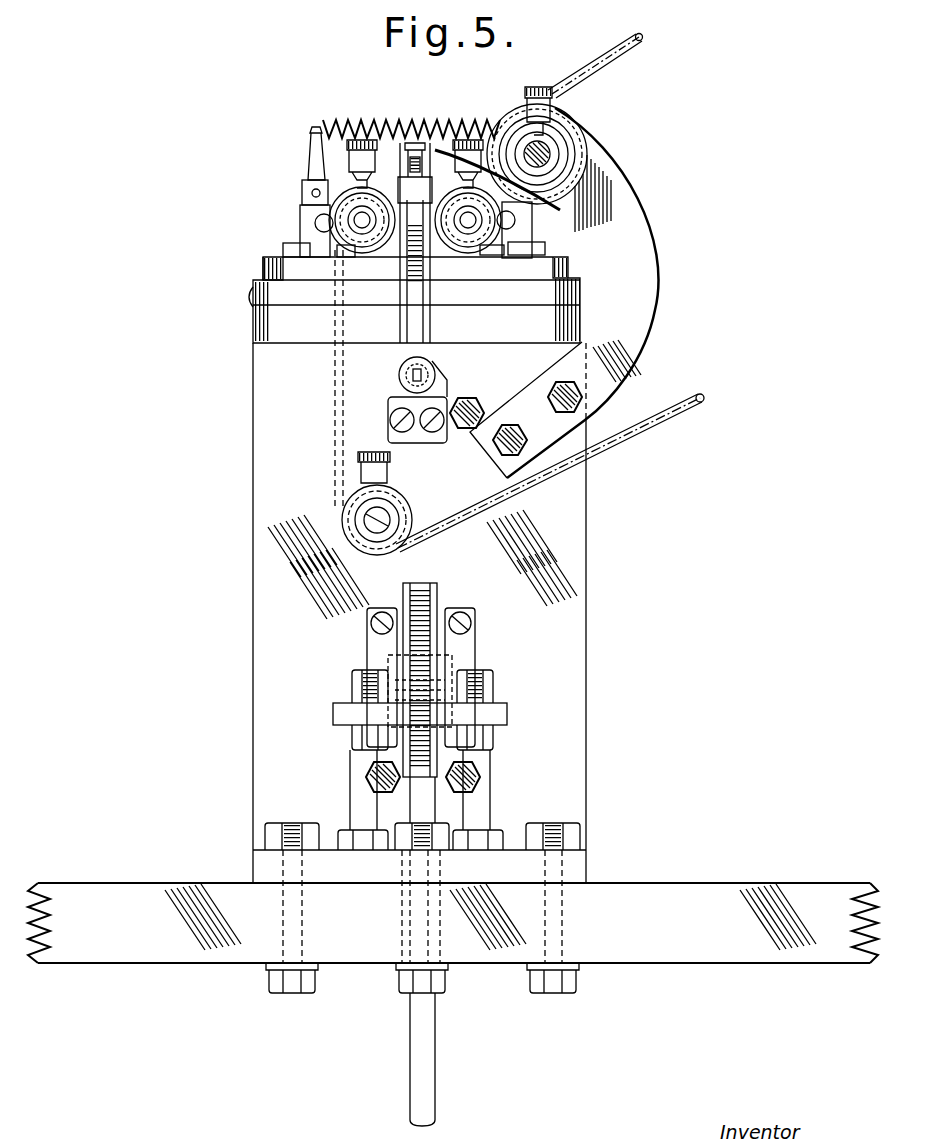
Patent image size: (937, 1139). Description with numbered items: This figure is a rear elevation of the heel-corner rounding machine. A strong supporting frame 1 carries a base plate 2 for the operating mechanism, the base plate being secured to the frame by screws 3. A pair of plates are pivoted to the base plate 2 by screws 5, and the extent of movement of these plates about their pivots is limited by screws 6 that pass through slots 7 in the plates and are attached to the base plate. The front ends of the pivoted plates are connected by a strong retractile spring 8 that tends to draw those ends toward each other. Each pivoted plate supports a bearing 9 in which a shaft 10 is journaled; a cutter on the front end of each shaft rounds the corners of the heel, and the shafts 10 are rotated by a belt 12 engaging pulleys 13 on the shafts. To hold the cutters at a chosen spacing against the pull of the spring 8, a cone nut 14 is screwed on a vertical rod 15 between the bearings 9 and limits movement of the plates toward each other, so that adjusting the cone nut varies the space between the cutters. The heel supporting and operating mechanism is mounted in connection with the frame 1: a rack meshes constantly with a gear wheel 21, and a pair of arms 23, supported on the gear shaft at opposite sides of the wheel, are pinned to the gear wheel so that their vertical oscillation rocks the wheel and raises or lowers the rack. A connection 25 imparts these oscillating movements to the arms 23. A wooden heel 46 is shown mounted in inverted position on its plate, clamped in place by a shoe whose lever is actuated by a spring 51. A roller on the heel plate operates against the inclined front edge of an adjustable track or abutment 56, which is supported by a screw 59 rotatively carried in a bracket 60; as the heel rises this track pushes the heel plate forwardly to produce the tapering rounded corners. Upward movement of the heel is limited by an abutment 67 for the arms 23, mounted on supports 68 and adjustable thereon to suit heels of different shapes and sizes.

The supporting frame 1 is at (573, 538).
The base plate 2 is at (569, 293).
The screws 3 is at (267, 268).
The screws 5 is at (362, 222).
The screws 6 is at (290, 250).
The slots 7 is at (565, 258).
The retractile spring 8 is at (388, 123).
The bearing 9 is at (338, 215).
The shaft 10 is at (337, 257).
The belt 12 is at (335, 392).
The pulleys 13 is at (340, 197).
The cone nut 14 is at (470, 118).
The vertical rod 15 is at (433, 170).
The gear wheel 21 is at (420, 592).
The arms 23 is at (440, 667).
The connection 25 is at (423, 683).
The wooden heel 46 is at (408, 150).
The spring 51 is at (253, 295).
The adjustable track or abutment 56 is at (418, 160).
The screw 59 is at (402, 380).
The bracket 60 is at (400, 393).
The abutment 67 is at (497, 717).
The supports 68 is at (481, 797).